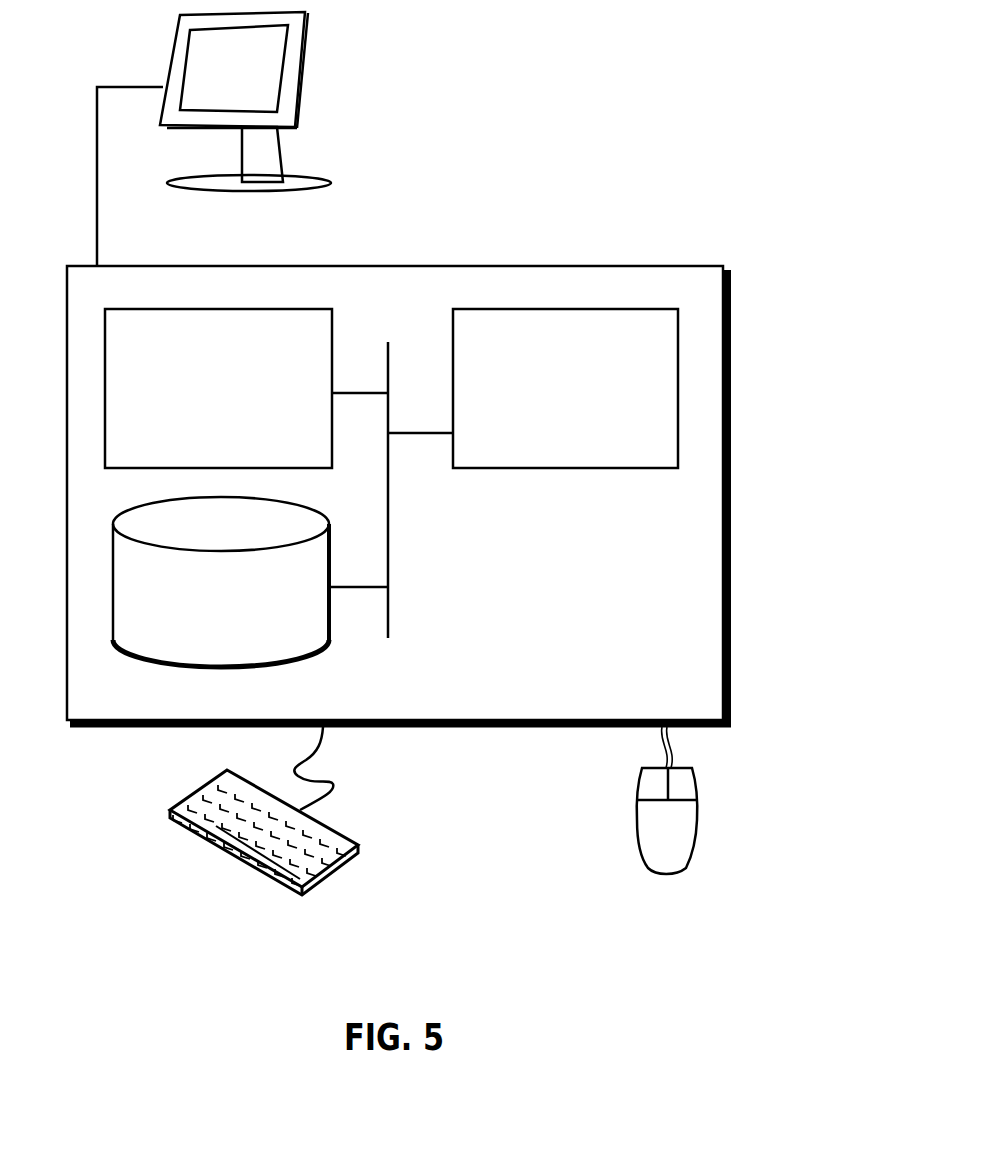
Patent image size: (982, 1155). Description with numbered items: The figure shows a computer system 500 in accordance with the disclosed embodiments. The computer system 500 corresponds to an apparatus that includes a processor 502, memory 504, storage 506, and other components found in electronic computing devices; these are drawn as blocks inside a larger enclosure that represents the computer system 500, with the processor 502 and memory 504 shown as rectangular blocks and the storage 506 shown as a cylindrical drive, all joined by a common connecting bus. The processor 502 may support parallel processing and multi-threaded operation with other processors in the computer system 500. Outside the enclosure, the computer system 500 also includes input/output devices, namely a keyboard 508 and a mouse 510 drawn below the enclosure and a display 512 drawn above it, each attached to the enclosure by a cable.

The computer system 500 is at (442, 245).
The processor 502 is at (548, 401).
The memory 504 is at (197, 401).
The storage 506 is at (204, 612).
The keyboard 508 is at (187, 833).
The mouse 510 is at (645, 844).
The display 512 is at (245, 117).